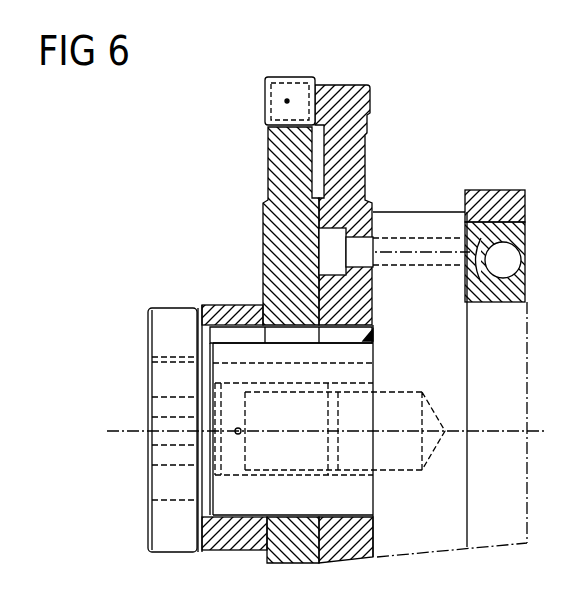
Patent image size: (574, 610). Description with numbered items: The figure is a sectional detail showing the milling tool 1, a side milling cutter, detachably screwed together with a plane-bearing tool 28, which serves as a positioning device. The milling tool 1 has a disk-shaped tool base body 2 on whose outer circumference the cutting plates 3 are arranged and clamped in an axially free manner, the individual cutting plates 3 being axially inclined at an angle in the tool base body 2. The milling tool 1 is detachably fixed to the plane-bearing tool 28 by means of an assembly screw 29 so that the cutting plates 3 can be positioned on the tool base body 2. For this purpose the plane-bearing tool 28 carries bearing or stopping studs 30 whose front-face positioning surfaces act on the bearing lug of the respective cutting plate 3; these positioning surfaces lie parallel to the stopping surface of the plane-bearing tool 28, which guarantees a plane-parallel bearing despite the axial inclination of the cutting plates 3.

The milling tool 1 is at (263, 265).
The tool base body 2 is at (280, 180).
The cutting plate 3 is at (265, 100).
The plane-bearing tool 28 is at (350, 103).
The assembly screw 29 is at (163, 528).
The stopping stud 30 is at (294, 77).